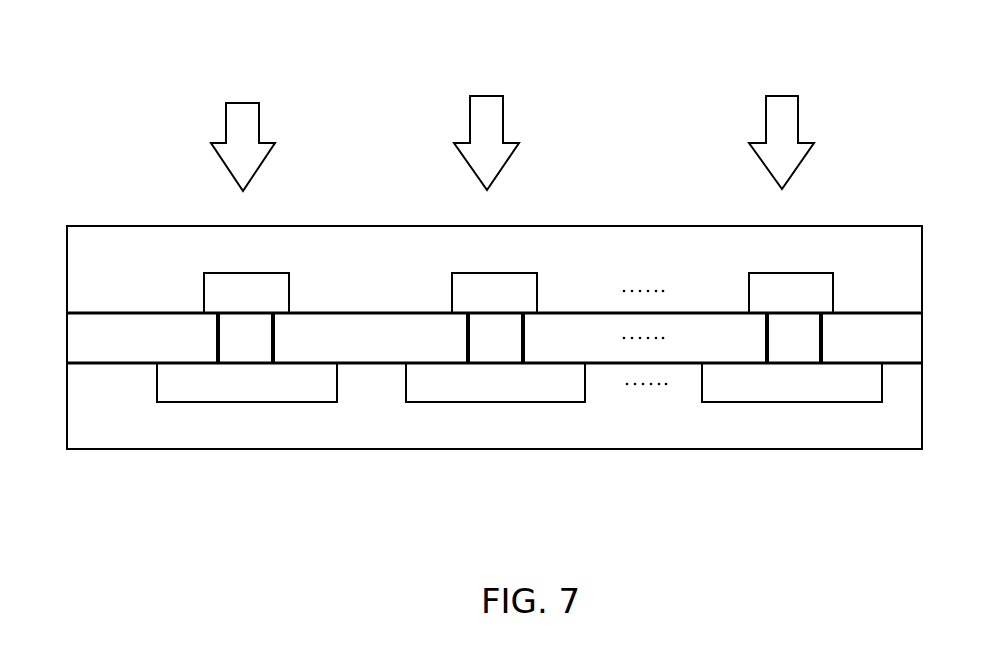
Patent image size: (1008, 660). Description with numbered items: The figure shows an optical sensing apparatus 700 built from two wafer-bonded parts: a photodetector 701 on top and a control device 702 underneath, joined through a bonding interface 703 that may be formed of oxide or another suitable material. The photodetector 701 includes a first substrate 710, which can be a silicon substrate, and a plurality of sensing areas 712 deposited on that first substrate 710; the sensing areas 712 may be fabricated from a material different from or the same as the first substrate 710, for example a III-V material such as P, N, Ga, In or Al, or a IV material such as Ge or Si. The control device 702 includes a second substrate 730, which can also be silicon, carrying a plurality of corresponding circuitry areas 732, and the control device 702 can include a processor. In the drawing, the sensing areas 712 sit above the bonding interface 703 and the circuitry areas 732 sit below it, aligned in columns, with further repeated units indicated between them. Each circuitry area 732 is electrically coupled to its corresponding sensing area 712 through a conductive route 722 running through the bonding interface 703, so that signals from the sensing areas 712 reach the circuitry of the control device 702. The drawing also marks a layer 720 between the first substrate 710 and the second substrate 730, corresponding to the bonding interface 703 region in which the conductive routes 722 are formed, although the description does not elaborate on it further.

The optical sensing apparatus 700 is at (88, 64).
The photodetector 701 is at (125, 303).
The control device 702 is at (125, 441).
The bonding interface 703 is at (125, 358).
The first substrate 710 is at (93, 263).
The sensing areas 712 is at (273, 293).
The second layer 720 is at (77, 346).
The conductive route 722 is at (217, 350).
The second substrate 730 is at (93, 400).
The circuitry areas 732 is at (282, 387).